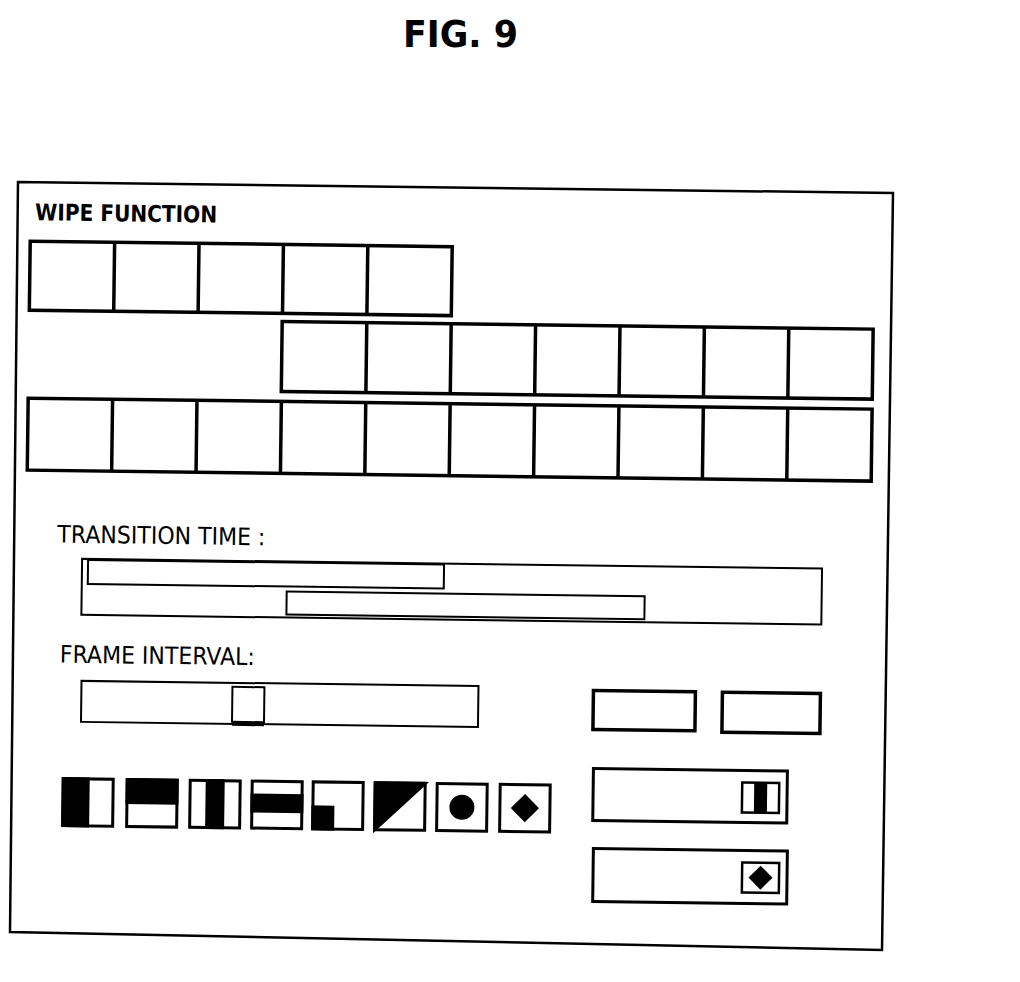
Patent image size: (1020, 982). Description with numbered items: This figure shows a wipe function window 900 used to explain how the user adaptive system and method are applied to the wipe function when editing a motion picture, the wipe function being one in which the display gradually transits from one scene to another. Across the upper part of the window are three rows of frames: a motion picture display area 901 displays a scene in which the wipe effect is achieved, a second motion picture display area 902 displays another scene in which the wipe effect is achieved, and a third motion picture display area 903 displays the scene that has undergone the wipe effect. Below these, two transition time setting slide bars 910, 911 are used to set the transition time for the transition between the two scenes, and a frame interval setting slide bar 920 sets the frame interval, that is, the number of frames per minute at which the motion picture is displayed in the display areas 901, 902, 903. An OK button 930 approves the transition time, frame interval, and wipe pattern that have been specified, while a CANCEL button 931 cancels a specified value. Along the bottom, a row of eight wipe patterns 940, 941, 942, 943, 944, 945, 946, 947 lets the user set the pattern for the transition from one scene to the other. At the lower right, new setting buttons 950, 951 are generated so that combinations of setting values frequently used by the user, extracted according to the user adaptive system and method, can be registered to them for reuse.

The wipe function window 900 is at (677, 184).
The motion picture display area 901 is at (455, 259).
The motion picture display area 902 is at (672, 319).
The motion picture display area 903 is at (744, 470).
The transition time setting slide bar 910 is at (373, 568).
The transition time setting slide bar 911 is at (485, 599).
The frame interval setting slide bar 920 is at (260, 687).
The OK button 930 is at (652, 682).
The CANCEL button 931 is at (767, 682).
The wipe pattern 940 is at (96, 825).
The wipe pattern 941 is at (158, 825).
The wipe pattern 942 is at (222, 825).
The wipe pattern 943 is at (284, 825).
The wipe pattern 944 is at (343, 825).
The wipe pattern 945 is at (405, 825).
The wipe pattern 946 is at (465, 825).
The wipe pattern 947 is at (531, 825).
The new setting button 950 is at (796, 772).
The new setting button 951 is at (797, 862).